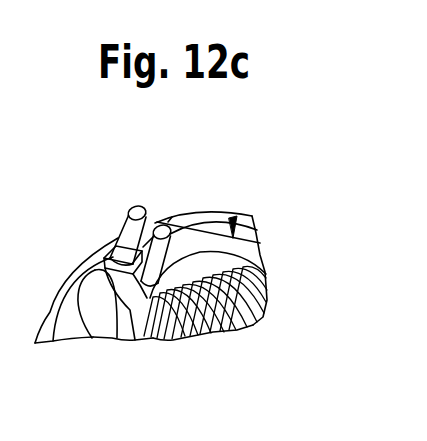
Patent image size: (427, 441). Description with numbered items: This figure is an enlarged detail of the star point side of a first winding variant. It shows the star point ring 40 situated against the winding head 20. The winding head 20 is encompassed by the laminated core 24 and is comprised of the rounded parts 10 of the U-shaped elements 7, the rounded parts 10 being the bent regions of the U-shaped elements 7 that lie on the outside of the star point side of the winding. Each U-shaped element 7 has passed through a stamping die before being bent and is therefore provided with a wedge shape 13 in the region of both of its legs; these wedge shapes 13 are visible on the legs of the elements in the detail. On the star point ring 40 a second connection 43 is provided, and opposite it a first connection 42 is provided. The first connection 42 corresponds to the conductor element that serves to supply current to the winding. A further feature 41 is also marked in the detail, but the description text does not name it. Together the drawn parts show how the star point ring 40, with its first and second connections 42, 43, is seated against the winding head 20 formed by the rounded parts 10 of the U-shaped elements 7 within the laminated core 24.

The rounded part 10 is at (85, 282).
The U-shaped element 7 is at (65, 242).
The laminated core 24 is at (50, 313).
The winding head 20 is at (82, 312).
The first connection 42 is at (142, 204).
The second connection 43 is at (168, 226).
The marking wedge 41 is at (236, 218).
The star point ring 40 is at (242, 243).
The wedge shape 13 is at (188, 323).